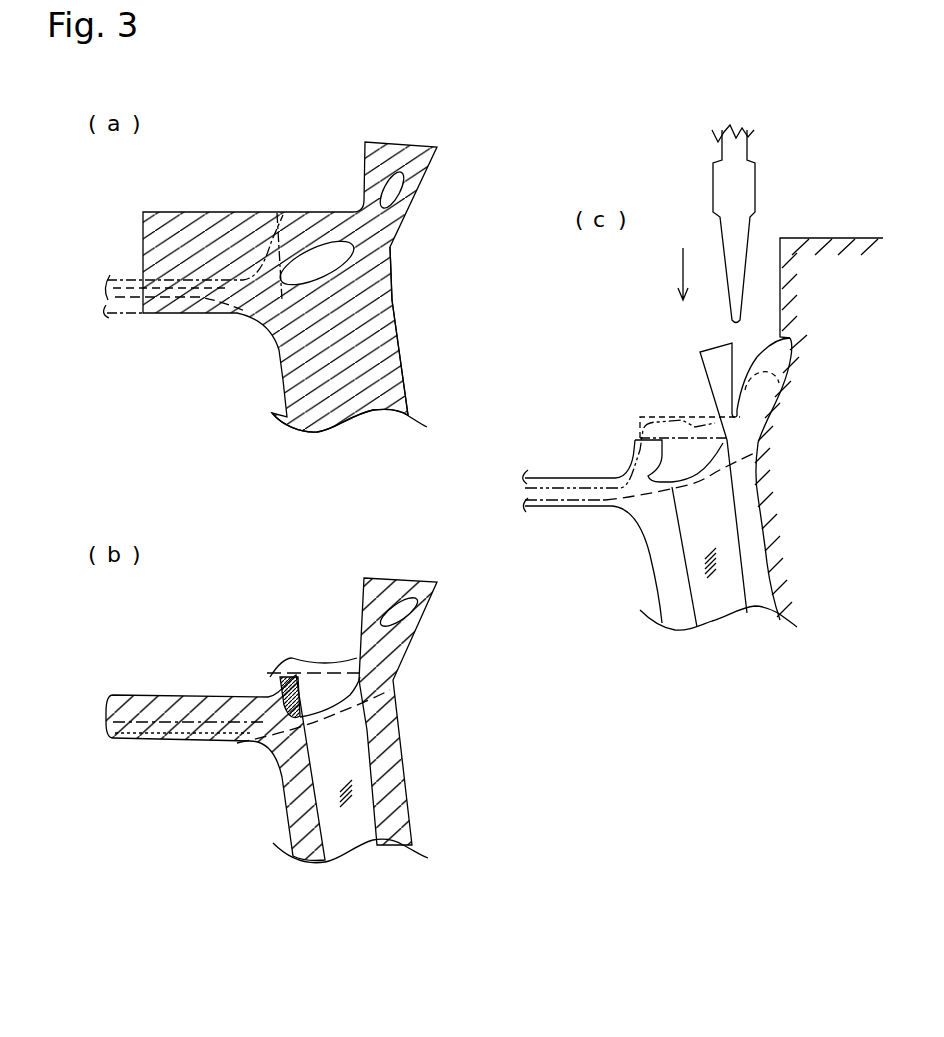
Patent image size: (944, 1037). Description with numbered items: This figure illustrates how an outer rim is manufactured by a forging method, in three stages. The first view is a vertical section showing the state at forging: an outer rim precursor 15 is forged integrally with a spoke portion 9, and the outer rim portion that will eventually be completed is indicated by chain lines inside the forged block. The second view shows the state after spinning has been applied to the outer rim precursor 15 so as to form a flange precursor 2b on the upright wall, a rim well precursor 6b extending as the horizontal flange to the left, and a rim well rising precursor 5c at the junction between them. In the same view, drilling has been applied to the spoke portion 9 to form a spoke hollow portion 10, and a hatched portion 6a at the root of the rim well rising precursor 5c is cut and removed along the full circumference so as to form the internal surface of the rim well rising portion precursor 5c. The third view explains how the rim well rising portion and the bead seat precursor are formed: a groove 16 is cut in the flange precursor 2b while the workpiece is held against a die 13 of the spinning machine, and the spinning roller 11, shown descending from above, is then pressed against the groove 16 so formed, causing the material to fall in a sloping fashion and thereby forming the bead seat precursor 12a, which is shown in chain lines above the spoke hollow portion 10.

The outer rim precursor 15 is at (222, 203).
The spoke portion 9 is at (373, 347).
The rim well precursor 6b is at (122, 688).
The rim well rising precursor 5c is at (268, 679).
The hatched portion 6a is at (297, 673).
The flange precursor 2b is at (418, 606).
The spoke hollow portion 10 is at (357, 785).
The spinning roller 11 is at (737, 198).
The groove 16 is at (748, 348).
The bead seat precursor 12a is at (645, 418).
The die 13 is at (852, 402).